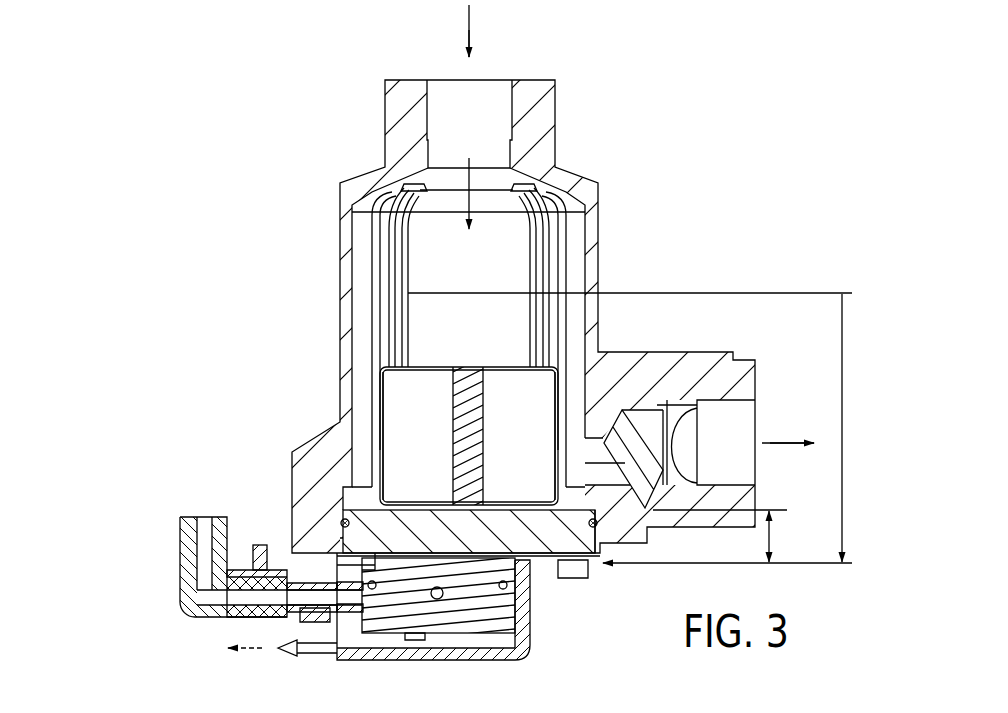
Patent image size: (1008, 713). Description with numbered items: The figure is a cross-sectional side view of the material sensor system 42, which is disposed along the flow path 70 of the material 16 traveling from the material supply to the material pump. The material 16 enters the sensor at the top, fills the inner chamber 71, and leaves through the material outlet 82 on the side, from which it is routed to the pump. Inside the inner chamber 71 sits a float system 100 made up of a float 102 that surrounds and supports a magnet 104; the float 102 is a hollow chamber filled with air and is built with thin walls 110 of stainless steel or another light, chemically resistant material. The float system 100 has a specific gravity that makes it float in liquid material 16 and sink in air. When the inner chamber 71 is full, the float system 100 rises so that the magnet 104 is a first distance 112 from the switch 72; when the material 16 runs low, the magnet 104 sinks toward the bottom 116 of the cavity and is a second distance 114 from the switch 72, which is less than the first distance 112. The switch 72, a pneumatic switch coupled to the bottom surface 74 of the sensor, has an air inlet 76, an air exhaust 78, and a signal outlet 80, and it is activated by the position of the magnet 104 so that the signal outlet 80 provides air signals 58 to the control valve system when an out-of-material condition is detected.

The material 16 is at (469, 24).
The material sensor system 42 is at (236, 226).
The air signals 58 is at (258, 648).
The flow path 70 is at (440, 37).
The inner chamber 71 is at (507, 286).
The switch 72 is at (498, 661).
The bottom surface 74 is at (552, 562).
The air inlet 76 is at (208, 517).
The air exhaust 78 is at (264, 548).
The signal outlet 80 is at (496, 79).
The material outlet 82 is at (758, 427).
The float system 100 is at (500, 351).
The float 102 is at (523, 391).
The magnet 104 is at (468, 404).
The thin walls 110 is at (466, 369).
The first distance 112 is at (840, 427).
The second distance 114 is at (772, 537).
The bottom 116 is at (566, 483).